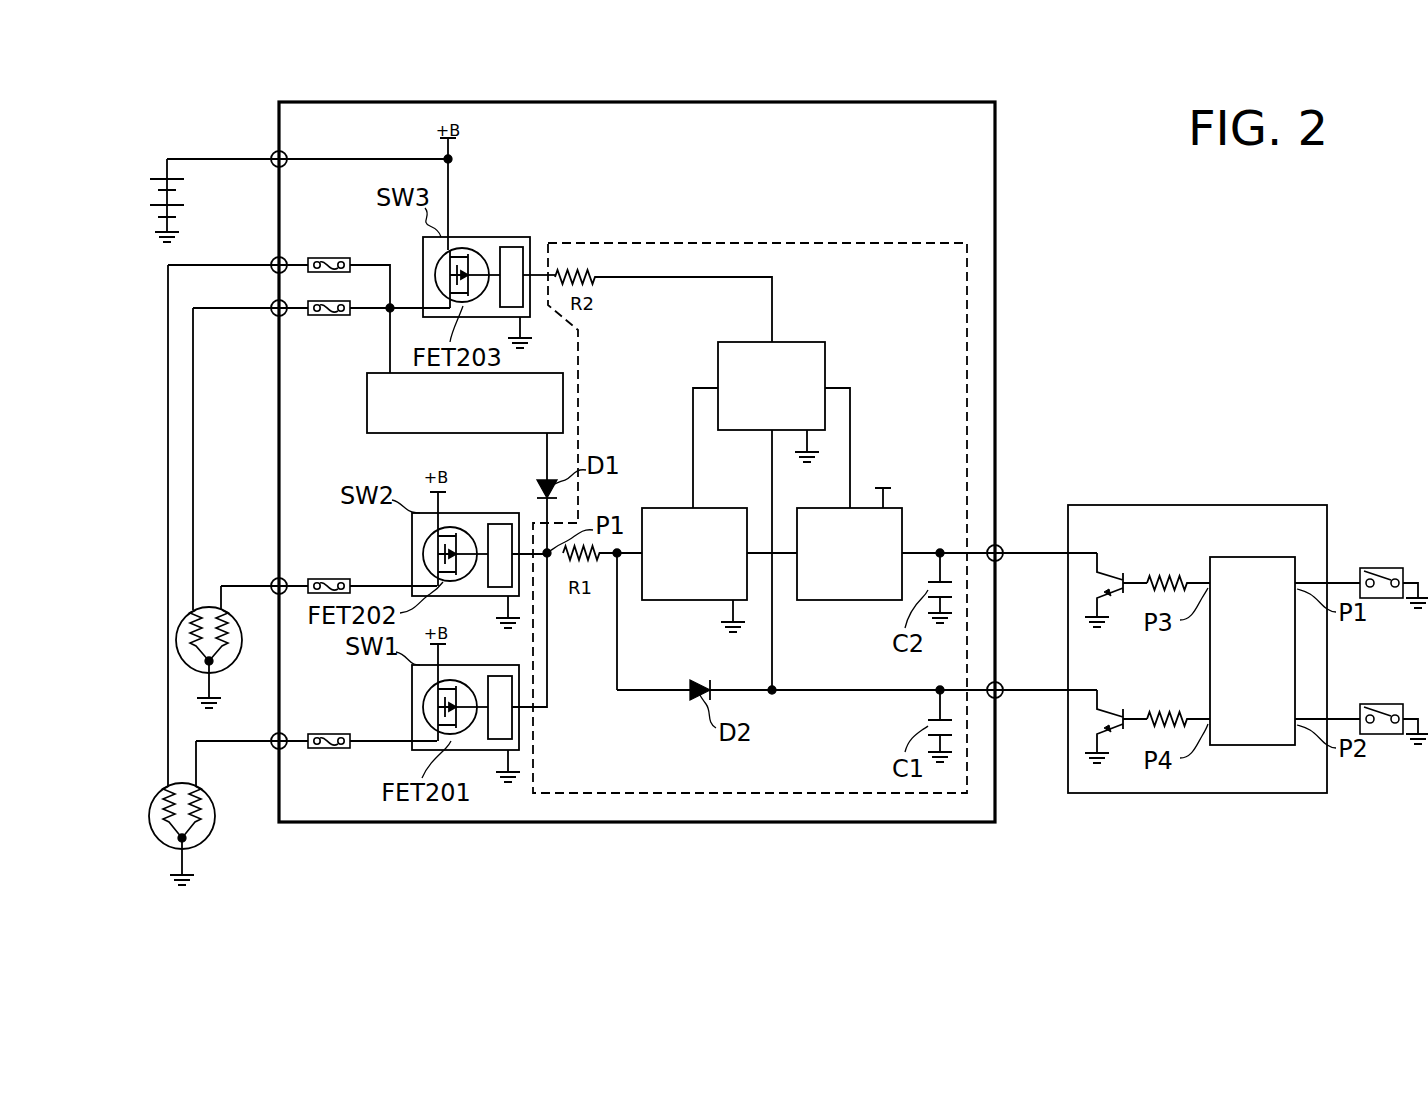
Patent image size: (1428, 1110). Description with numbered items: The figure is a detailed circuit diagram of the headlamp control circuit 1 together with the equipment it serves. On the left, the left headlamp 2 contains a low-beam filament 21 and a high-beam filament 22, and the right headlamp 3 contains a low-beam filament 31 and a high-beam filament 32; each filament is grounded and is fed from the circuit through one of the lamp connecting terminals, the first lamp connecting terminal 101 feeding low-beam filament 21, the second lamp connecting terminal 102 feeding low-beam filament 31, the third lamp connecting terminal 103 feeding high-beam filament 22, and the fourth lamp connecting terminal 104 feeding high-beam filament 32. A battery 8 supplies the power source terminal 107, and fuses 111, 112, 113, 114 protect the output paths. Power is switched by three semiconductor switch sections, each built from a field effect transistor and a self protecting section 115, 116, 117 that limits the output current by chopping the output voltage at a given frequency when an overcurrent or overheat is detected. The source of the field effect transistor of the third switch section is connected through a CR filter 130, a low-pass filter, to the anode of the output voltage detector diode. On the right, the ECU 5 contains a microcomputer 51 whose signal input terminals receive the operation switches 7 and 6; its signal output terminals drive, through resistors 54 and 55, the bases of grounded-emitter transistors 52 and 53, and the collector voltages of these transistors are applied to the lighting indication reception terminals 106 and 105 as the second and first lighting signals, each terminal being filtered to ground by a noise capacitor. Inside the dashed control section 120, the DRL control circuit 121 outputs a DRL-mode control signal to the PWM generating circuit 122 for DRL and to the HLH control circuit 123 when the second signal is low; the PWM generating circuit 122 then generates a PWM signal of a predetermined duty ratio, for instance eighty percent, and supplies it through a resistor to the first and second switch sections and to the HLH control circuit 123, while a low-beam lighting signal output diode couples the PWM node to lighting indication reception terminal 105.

The headlamp control circuit 1 is at (878, 102).
The left headlamp 2 is at (185, 575).
The right headlamp 3 is at (198, 518).
The ECU 5 is at (1272, 505).
The operation switch 6 is at (1378, 699).
The operation switch 7 is at (1378, 563).
The battery 8 is at (186, 190).
The low-beam filament 21 is at (203, 831).
The high-beam filament 22 is at (170, 831).
The low-beam filament 31 is at (228, 650).
The high-beam filament 32 is at (178, 634).
The microcomputer 51 is at (1257, 557).
The transistor 52 is at (1115, 573).
The transistor 53 is at (1115, 709).
The resistor 54 is at (1172, 576).
The resistor 55 is at (1172, 712).
The first lamp connecting terminal 101 is at (275, 749).
The second lamp connecting terminal 102 is at (275, 581).
The third lamp connecting terminal 103 is at (273, 260).
The fourth lamp connecting terminal 104 is at (273, 314).
The lighting indication reception terminal 105 is at (1003, 682).
The lighting indication reception terminal 106 is at (1003, 545).
The power source terminal 107 is at (275, 154).
The fuse 111 is at (331, 734).
The fuse 112 is at (331, 579).
The fuse 113 is at (330, 258).
The fuse 114 is at (330, 315).
The self protecting section 115 is at (500, 676).
The self protecting section 116 is at (503, 524).
The self protecting section 117 is at (510, 247).
The control section 120 is at (893, 243).
The DRL control circuit 121 is at (838, 600).
The PWM generating circuit for DRL 122 is at (668, 600).
The HLH control circuit 123 is at (812, 342).
The CR filter 130 is at (367, 413).